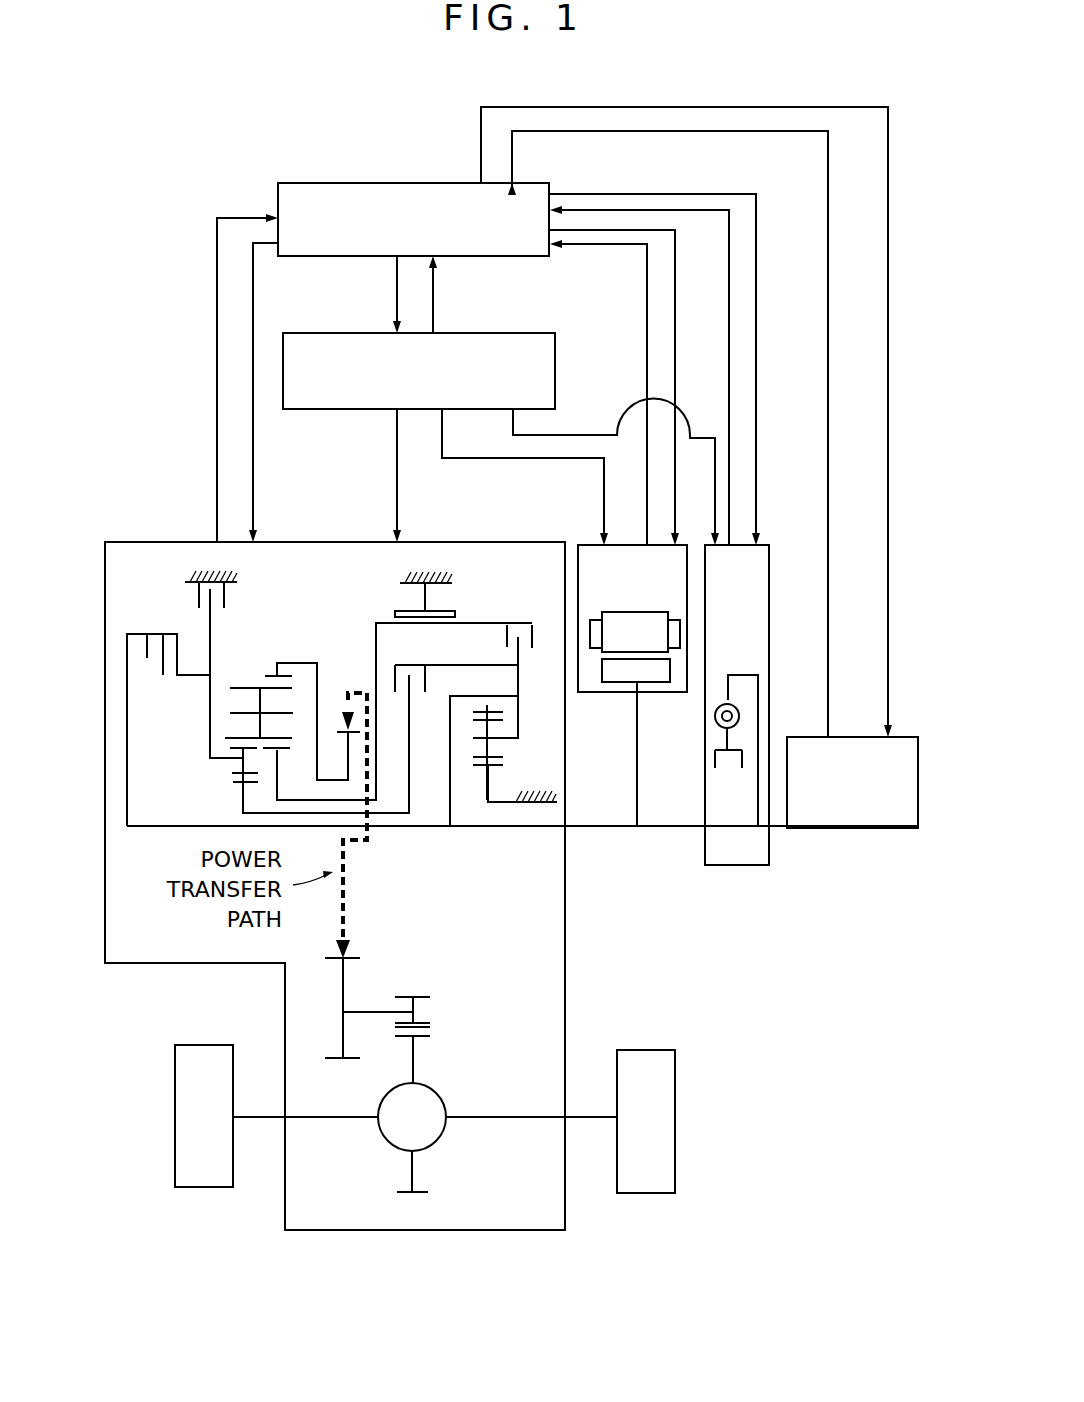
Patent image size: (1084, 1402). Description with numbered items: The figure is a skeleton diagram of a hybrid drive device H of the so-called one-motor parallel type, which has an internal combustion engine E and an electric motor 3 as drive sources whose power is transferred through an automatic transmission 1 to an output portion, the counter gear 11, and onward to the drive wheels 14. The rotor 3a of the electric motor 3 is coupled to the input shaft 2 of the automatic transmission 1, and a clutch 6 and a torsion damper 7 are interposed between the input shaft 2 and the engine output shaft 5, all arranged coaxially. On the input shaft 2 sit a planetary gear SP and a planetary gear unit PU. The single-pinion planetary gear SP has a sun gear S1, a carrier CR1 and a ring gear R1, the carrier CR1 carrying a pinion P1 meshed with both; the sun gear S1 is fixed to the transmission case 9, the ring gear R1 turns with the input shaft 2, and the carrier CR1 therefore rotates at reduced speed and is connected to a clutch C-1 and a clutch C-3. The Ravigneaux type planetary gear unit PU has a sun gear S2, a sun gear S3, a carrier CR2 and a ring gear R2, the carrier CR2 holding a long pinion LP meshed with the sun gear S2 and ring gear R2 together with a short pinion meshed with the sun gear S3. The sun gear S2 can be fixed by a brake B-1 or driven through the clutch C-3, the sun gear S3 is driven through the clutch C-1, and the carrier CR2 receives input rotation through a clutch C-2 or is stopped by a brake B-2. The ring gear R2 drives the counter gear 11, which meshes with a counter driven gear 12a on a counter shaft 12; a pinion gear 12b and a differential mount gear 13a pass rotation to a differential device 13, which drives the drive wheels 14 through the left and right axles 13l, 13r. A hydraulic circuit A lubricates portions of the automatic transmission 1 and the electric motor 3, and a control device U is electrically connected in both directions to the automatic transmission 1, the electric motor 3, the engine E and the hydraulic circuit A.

The automatic transmission 1 is at (325, 600).
The input shaft 2 is at (546, 830).
The electric motor 3 is at (623, 598).
The rotor 3a is at (673, 670).
The engine output shaft 5 is at (762, 830).
The clutch 6 is at (728, 768).
The torsion damper 7 is at (725, 703).
The transmission case 9 is at (237, 577).
The counter gear 11 is at (338, 728).
The counter shaft 12 is at (363, 1010).
The counter driven gear 12a is at (333, 1062).
The pinion gear 12b is at (420, 995).
The differential device 13 is at (452, 1087).
The differential mount gear 13a is at (427, 1032).
The left axle 13l is at (337, 1122).
The right axle 13r is at (492, 1120).
The drive wheels 14 is at (208, 1043).
The control device U is at (385, 182).
The hydraulic circuit A is at (533, 332).
The hybrid drive device H is at (505, 535).
The internal combustion engine E is at (846, 692).
The planetary gear unit PU is at (292, 648).
The planetary gear SP is at (530, 685).
The long pinion LP is at (245, 685).
The ring gear R1 is at (505, 692).
The ring gear R2 is at (277, 673).
The sun gear S1 is at (495, 770).
The sun gear S2 is at (278, 750).
The sun gear S3 is at (230, 787).
The pinion P1 is at (495, 752).
The carrier CR1 is at (518, 732).
The carrier CR2 is at (228, 715).
The clutch C-1 is at (454, 728).
The clutch C-2 is at (156, 643).
The clutch C-3 is at (503, 670).
The brake B-1 is at (425, 584).
The brake B-2 is at (211, 578).